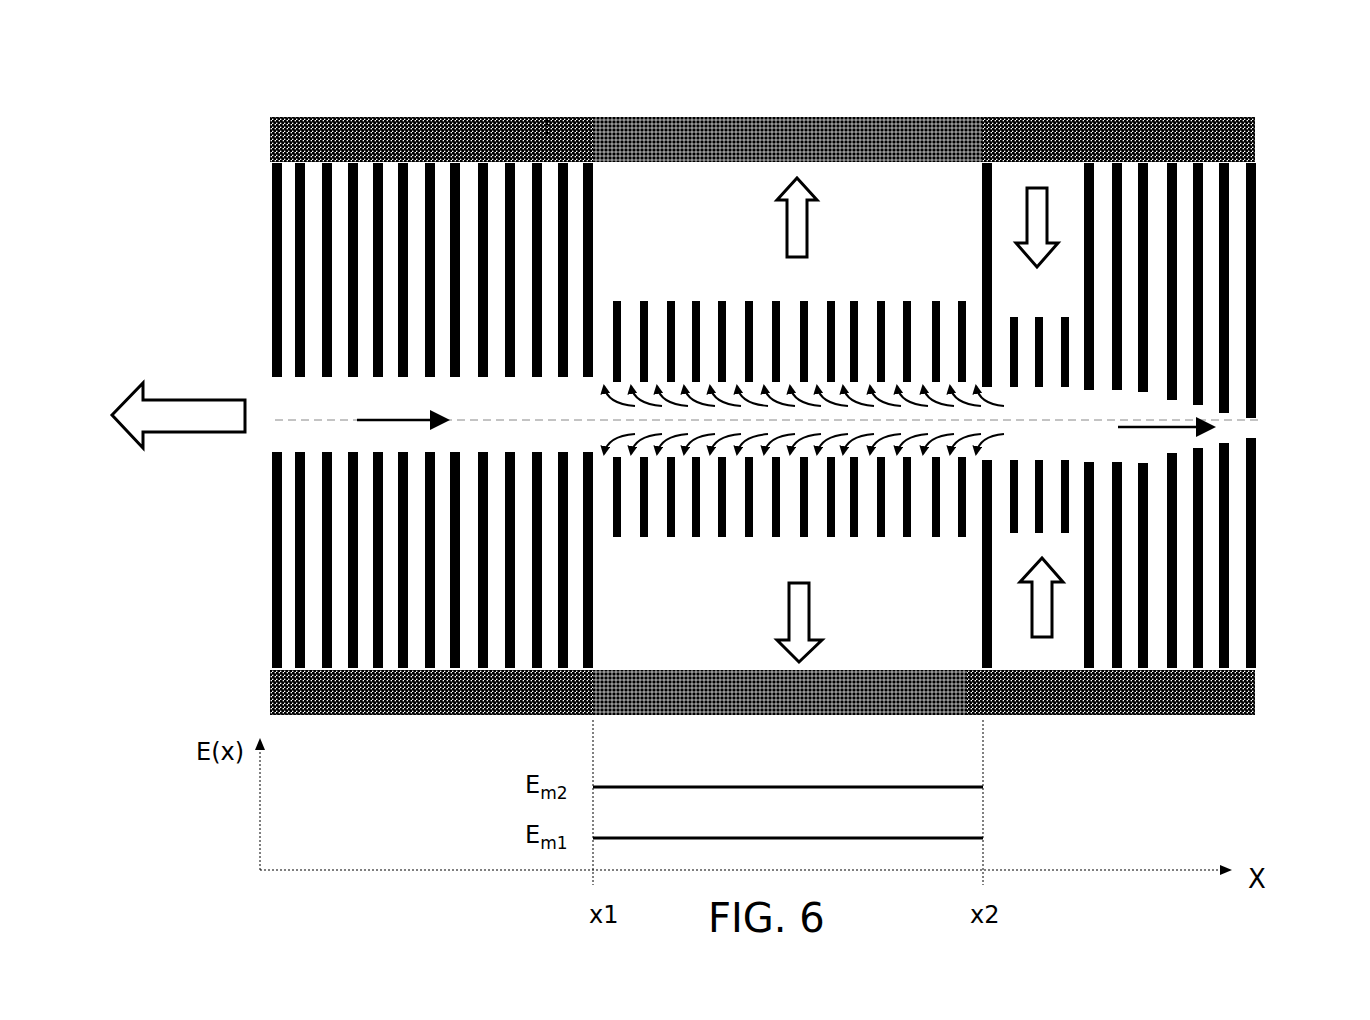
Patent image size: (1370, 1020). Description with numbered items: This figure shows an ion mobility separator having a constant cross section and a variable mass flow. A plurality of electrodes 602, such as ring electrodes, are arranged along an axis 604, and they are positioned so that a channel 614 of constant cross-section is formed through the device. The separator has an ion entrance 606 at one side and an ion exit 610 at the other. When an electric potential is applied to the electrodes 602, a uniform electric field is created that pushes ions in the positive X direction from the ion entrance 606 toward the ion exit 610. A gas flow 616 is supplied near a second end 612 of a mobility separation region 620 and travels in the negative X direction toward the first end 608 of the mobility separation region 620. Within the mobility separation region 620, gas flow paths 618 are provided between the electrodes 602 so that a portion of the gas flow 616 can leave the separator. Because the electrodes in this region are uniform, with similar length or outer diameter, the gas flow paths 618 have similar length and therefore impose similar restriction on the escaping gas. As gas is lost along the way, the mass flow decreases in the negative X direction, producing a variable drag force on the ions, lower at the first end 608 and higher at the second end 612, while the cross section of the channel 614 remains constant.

The electrodes 602 is at (804, 329).
The axis 604 is at (804, 506).
The ion entrance 606 is at (270, 402).
The first end 608 is at (431, 217).
The ion exit 610 is at (1266, 435).
The second end 612 is at (1119, 241).
The channel 614 is at (1034, 449).
The gas flow 616 is at (1111, 658).
The gas flow paths 618 is at (947, 326).
The mobility separation region 620 is at (978, 102).